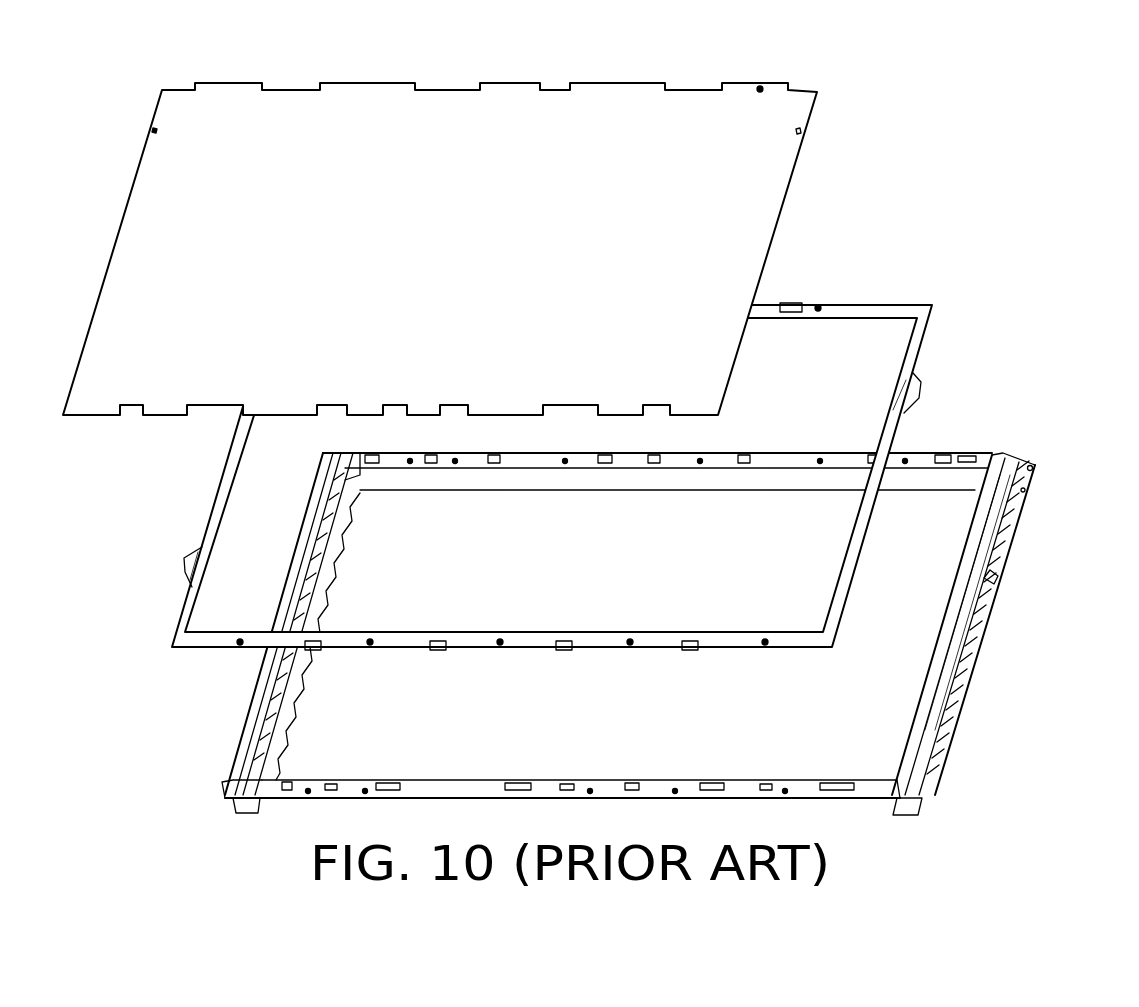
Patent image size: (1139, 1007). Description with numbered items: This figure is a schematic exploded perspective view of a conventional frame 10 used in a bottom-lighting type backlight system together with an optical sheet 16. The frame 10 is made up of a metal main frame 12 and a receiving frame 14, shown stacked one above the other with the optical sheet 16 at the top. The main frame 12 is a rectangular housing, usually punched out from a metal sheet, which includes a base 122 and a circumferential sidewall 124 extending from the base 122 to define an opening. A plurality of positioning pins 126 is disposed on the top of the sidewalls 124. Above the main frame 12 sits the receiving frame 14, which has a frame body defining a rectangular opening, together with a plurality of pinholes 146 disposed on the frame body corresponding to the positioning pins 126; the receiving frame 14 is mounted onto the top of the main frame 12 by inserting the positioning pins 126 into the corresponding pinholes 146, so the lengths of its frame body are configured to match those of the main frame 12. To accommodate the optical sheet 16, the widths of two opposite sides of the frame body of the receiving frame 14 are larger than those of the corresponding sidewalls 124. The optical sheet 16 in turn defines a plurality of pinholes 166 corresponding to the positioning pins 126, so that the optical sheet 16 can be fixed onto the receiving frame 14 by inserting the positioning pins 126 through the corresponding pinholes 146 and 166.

The frame 10 is at (517, 38).
The main frame 12 is at (1018, 512).
The base 122 is at (908, 650).
The sidewall 124 is at (983, 463).
The positioning pins 126 is at (967, 457).
The receiving frame 14 is at (932, 305).
The pinholes 146 is at (868, 305).
The optical sheet 16 is at (805, 113).
The pinholes 166 is at (760, 88).